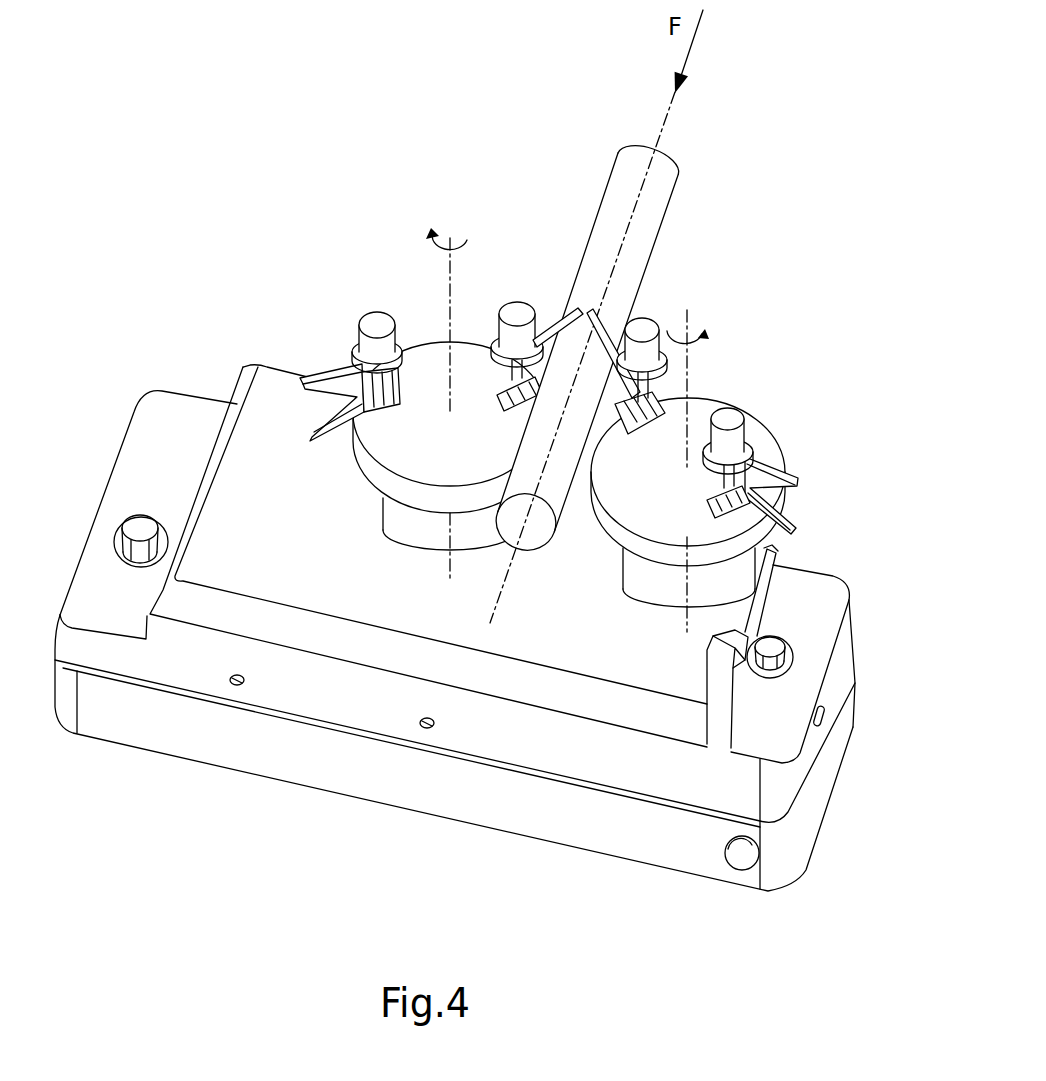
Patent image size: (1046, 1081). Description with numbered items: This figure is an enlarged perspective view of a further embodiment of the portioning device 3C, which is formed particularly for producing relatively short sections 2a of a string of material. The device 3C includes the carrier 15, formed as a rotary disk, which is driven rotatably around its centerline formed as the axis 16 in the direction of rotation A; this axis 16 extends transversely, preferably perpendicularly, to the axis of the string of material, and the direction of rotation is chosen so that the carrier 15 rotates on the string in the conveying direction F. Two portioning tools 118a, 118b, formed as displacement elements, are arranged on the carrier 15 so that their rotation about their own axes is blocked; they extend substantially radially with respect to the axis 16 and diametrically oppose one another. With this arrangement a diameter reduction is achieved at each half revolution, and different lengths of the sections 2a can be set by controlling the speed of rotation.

The portioning device 3C is at (834, 345).
The sections 2a is at (548, 542).
The carrier 15 is at (757, 430).
The first axis 16 is at (689, 311).
The portioning tool 118a is at (670, 387).
The portioning tool 118b is at (798, 482).